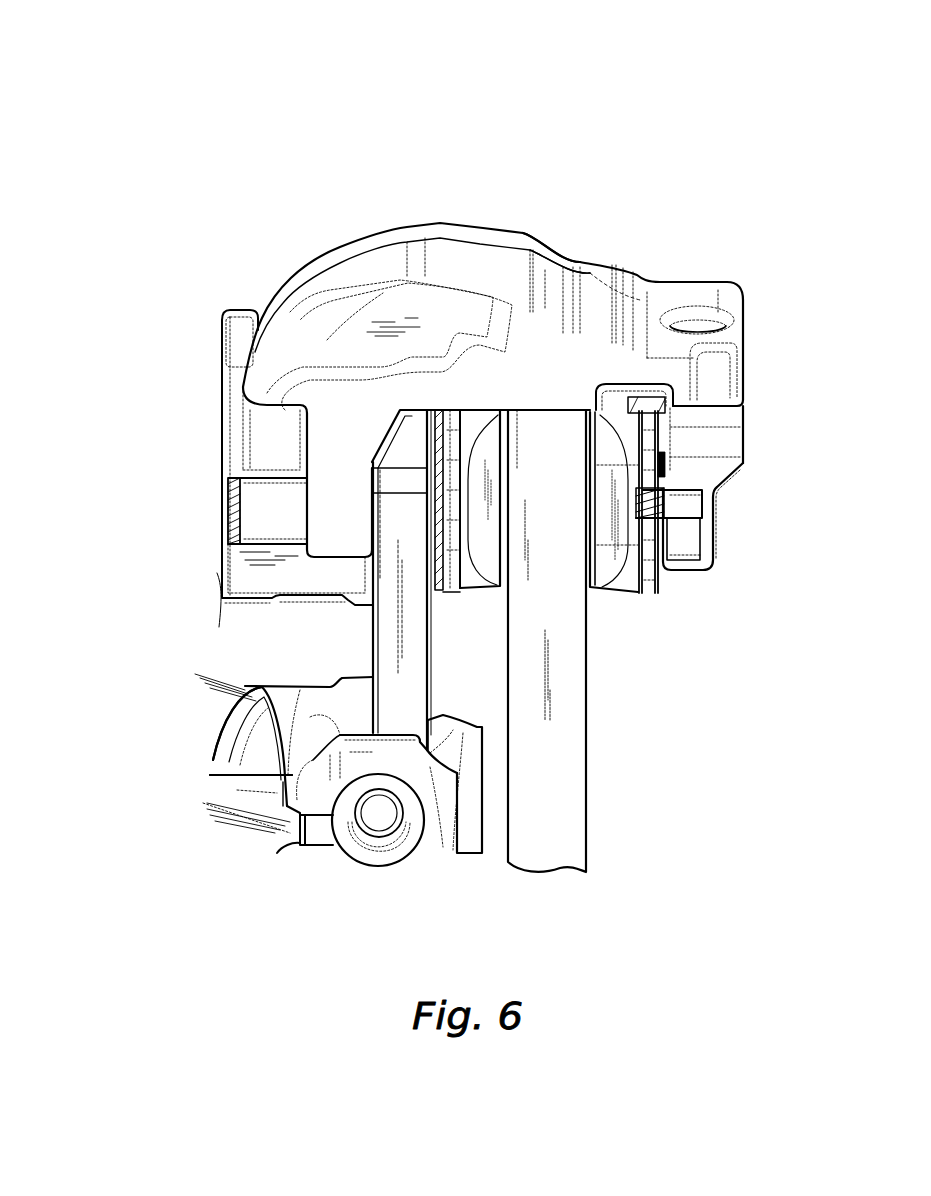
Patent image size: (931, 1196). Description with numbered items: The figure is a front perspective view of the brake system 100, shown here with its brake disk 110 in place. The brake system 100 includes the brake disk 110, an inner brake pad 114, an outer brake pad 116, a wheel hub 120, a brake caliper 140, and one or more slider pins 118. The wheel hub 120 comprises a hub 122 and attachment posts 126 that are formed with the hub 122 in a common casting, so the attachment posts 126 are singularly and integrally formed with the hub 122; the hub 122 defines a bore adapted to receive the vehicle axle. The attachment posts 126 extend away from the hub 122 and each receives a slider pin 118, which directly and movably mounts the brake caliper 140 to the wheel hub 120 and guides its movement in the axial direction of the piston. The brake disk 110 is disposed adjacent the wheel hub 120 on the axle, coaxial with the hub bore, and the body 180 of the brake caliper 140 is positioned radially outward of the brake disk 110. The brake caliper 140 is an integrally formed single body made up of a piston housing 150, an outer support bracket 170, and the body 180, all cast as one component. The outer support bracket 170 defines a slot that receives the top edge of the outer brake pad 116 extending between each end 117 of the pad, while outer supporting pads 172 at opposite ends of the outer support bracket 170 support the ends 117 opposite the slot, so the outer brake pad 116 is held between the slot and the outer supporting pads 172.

The brake system 100 is at (330, 90).
The brake disk 110 is at (558, 807).
The inner brake pad 114 is at (460, 586).
The outer brake pad 116 is at (628, 582).
The end of the outer brake pad 117 is at (647, 492).
The slider pin 118 is at (229, 507).
The wheel hub 120 is at (240, 854).
The hub 122 is at (244, 803).
The attachment post 126 is at (395, 667).
The brake caliper 140 is at (621, 210).
The piston housing 150 is at (243, 447).
The outer support bracket 170 is at (720, 378).
The outer supporting pad 172 is at (680, 533).
The body 180 is at (547, 277).